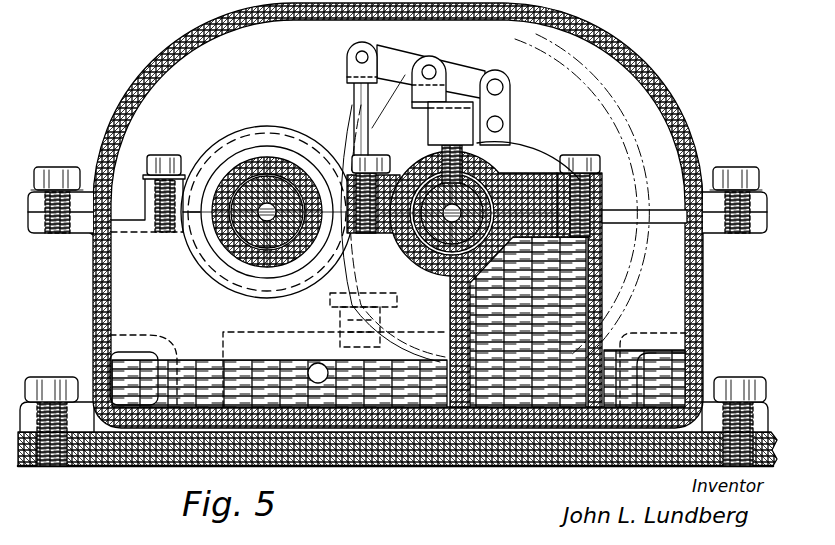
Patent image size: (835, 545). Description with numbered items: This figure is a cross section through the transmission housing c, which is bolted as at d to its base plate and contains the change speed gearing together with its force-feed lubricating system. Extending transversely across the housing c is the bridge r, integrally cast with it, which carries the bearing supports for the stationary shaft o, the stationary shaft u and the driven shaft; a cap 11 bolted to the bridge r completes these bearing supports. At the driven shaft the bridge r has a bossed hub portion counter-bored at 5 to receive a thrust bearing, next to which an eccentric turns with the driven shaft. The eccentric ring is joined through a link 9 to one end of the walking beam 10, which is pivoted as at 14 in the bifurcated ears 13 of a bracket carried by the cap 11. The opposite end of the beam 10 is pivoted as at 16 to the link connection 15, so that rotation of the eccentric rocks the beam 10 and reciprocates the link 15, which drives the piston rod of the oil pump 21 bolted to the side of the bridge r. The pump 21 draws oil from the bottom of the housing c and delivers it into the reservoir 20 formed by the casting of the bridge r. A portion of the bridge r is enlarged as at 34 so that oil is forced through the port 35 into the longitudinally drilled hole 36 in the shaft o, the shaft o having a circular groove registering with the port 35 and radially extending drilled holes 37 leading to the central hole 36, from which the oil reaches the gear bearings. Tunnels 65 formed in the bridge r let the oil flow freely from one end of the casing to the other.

The counter-bore 5 is at (512, 128).
The link 9 is at (510, 107).
The walking beam 10 is at (463, 68).
The cap 11 is at (193, 177).
The bifurcated ears 13 is at (421, 60).
The pivot 14 is at (438, 68).
The link connection 15 is at (356, 94).
The pivot 16 is at (355, 55).
The reservoir 20 is at (513, 388).
The pump 21 is at (247, 330).
The enlarged portion 34 is at (602, 268).
The port 35 is at (427, 277).
The longitudinally drilled hole 36 is at (407, 256).
The radially extending drilled holes 37 is at (435, 158).
The tunnels 65 is at (38, 376).
The housing c is at (632, 52).
The bolts d is at (38, 377).
The stationary shaft o is at (602, 234).
The bridge r is at (672, 284).
The stationary shaft u is at (247, 166).